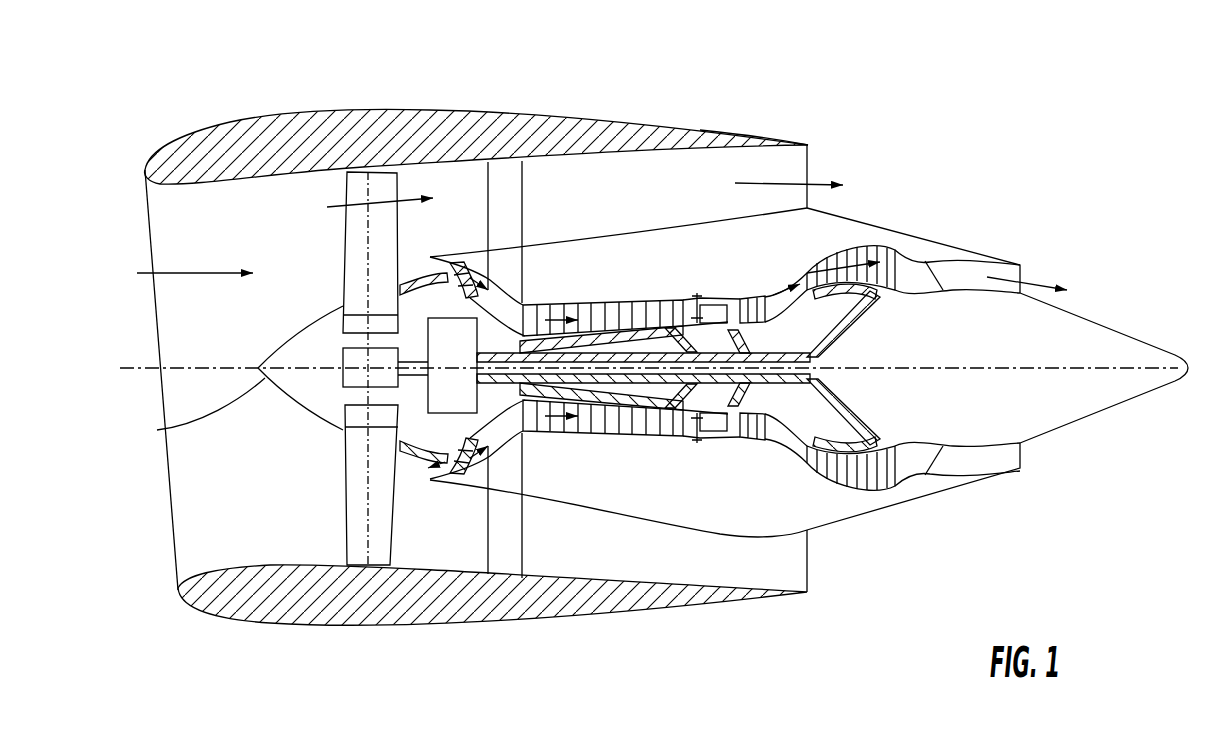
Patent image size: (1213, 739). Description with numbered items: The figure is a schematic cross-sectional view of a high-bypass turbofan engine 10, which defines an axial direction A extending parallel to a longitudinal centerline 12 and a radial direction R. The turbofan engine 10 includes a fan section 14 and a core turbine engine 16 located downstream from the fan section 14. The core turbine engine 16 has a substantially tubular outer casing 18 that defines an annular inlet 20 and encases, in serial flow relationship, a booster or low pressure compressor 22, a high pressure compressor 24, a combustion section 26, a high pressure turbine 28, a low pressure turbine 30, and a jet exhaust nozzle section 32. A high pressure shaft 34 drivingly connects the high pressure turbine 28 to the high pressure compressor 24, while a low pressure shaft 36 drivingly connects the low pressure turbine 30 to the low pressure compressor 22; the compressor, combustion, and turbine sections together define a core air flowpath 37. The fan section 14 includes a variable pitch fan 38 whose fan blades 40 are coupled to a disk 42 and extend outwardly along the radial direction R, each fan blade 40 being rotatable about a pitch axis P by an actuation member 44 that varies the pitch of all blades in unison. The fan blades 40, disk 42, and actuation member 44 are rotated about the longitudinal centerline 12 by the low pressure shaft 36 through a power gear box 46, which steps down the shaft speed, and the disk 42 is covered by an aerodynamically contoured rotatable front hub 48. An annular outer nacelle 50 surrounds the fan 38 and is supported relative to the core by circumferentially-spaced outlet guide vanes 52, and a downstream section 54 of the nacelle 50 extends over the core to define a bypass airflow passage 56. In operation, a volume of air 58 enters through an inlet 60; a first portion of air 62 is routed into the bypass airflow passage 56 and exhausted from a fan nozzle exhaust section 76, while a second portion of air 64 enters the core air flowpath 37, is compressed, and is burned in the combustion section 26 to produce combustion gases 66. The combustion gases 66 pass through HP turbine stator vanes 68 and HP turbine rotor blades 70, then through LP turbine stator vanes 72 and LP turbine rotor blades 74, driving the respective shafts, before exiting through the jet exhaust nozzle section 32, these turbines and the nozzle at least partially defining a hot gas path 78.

The turbofan engine 10 is at (940, 127).
The longitudinal centerline 12 is at (963, 367).
The fan section 14 is at (307, 192).
The core turbine engine 16 is at (637, 263).
The outer casing 18 is at (677, 520).
The annular inlet 20 is at (427, 468).
The low pressure compressor 22 is at (487, 437).
The high pressure compressor 24 is at (552, 427).
The combustion section 26 is at (713, 428).
The high pressure turbine 28 is at (773, 437).
The low pressure turbine 30 is at (887, 493).
The jet exhaust nozzle section 32 is at (940, 470).
The high pressure shaft 34 is at (717, 338).
The low pressure shaft 36 is at (820, 337).
The core air flowpath 37 is at (500, 447).
The variable pitch fan 38 is at (313, 418).
The fan blades 40 is at (343, 508).
The disk 42 is at (360, 327).
The actuation member 44 is at (340, 352).
The power gear box 46 is at (460, 336).
The front hub 48 is at (167, 433).
The outer nacelle 50 is at (390, 628).
The outlet guide vanes 52 is at (522, 187).
The downstream section 54 is at (757, 137).
The bypass airflow passage 56 is at (686, 197).
The volume of air 58 is at (197, 268).
The inlet 60 is at (175, 567).
The first portion of air 62 is at (360, 207).
The second portion of air 64 is at (415, 268).
The combustion gases 66 is at (753, 297).
The HP turbine stator vanes 68 is at (723, 430).
The HP turbine rotor blades 70 is at (745, 413).
The LP turbine stator vanes 72 is at (813, 472).
The LP turbine rotor blades 74 is at (823, 480).
The fan nozzle exhaust section 76 is at (797, 168).
The hot gas path 78 is at (795, 278).
The pitch axis P is at (370, 186).
The radial direction R is at (73, 233).
The axial direction A is at (707, 680).